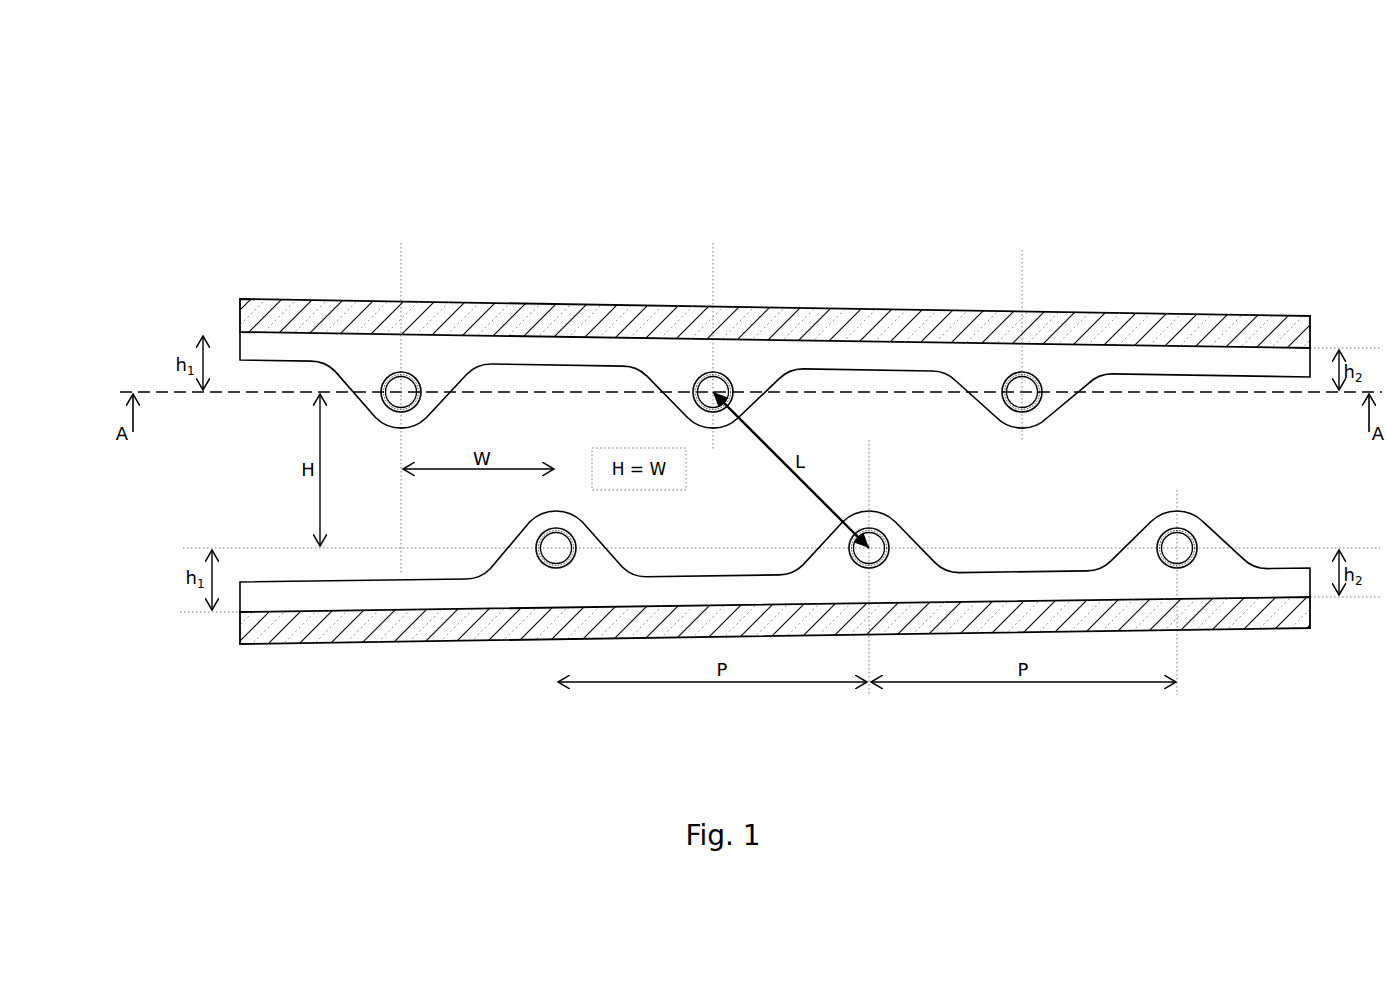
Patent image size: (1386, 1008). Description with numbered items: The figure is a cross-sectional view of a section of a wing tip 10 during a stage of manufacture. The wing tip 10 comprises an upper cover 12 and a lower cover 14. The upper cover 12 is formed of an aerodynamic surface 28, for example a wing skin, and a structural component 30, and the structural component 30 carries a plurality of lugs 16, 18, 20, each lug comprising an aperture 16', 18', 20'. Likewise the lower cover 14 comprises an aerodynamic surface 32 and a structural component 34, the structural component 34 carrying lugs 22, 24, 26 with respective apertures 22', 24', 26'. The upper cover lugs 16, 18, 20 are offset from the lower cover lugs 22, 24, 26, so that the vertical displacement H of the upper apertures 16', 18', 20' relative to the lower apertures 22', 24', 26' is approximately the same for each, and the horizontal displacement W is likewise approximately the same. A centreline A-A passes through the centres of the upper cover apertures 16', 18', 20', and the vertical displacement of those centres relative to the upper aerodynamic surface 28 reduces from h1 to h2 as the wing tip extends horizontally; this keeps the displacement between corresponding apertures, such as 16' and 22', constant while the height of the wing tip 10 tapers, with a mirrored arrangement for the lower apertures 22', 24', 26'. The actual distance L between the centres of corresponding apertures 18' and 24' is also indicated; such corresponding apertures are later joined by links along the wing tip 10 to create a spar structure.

The wing tip 10 is at (784, 182).
The upper cover 12 is at (1213, 312).
The lower cover 14 is at (1252, 632).
The lug 16 is at (401, 310).
The lug 18 is at (713, 300).
The lug 20 is at (1022, 311).
The aperture 16' is at (333, 433).
The aperture 18' is at (674, 403).
The aperture 20' is at (991, 419).
The lug 22 is at (540, 646).
The lug 24 is at (869, 659).
The lug 26 is at (1169, 647).
The aperture 22' is at (516, 541).
The aperture 24' is at (829, 546).
The aperture 26' is at (1130, 542).
The aerodynamic surface 28 is at (283, 315).
The structural component 30 is at (265, 347).
The aerodynamic surface 32 is at (265, 633).
The structural component 34 is at (330, 597).